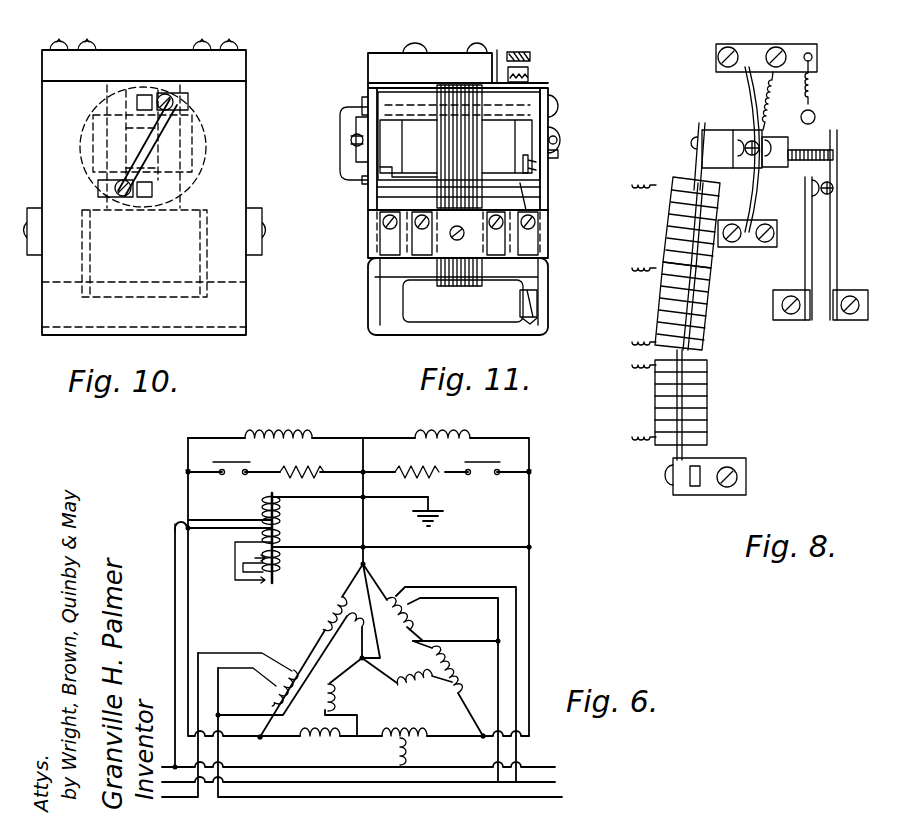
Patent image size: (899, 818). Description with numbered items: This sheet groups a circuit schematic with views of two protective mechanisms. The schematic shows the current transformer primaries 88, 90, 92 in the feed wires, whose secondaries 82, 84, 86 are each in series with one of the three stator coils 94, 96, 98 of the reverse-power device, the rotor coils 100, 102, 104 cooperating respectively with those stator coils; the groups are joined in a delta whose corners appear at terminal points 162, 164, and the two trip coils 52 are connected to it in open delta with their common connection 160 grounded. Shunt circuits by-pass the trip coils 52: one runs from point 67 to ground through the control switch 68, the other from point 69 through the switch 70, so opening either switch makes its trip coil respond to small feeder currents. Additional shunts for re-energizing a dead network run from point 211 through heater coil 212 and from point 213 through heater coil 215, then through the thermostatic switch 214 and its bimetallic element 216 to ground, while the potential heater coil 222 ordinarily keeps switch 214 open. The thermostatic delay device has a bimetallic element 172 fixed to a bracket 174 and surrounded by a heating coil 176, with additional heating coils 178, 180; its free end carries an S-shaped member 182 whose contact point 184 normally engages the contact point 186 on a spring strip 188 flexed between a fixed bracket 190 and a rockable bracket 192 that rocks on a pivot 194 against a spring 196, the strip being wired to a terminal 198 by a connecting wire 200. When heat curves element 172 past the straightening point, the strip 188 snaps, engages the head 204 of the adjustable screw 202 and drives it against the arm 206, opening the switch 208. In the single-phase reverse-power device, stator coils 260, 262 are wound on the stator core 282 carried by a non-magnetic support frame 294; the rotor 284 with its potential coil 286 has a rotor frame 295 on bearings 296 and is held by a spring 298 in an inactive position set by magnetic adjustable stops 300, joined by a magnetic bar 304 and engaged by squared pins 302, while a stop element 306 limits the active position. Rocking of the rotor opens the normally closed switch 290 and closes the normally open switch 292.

In FIG. 6, the trip coils 52 is at (282, 432).
In FIG. 6, the point 67 is at (188, 472).
In FIG. 6, the control switch 68 is at (230, 462).
In FIG. 6, the point 69 is at (529, 472).
In FIG. 6, the switch 70 is at (486, 462).
In FIG. 6, the current transformer secondary 82 is at (395, 734).
In FIG. 6, the current transformer secondary 84 is at (413, 622).
In FIG. 6, the current transformer secondary 86 is at (293, 670).
In FIG. 6, the current transformer primary 88 is at (410, 752).
In FIG. 6, the current transformer primary 90 is at (393, 605).
In FIG. 6, the current transformer primary 92 is at (266, 679).
In FIG. 6, the stator coil 94 is at (322, 740).
In FIG. 6, the stator coil 96 is at (452, 666).
In FIG. 6, the stator coil 98 is at (334, 611).
In FIG. 6, the rotor coil 100 is at (334, 695).
In FIG. 6, the rotor coil 102 is at (421, 684).
In FIG. 6, the rotor coil 104 is at (353, 634).
In FIG. 6, the common connection 160 is at (362, 565).
In FIG. 6, the terminal junction 162 is at (260, 739).
In FIG. 6, the terminal junction 164 is at (483, 738).
In FIG. 8, the bimetallic element 172 is at (692, 145).
In FIG. 8, the bracket 174 is at (739, 458).
In FIG. 8, the heating coil 176 is at (710, 398).
In FIG. 8, the heating coil 178 is at (662, 298).
In FIG. 6, the heating coil 178 is at (397, 466).
In FIG. 8, the heating coil 180 is at (672, 239).
In FIG. 6, the heating coil 180 is at (318, 465).
In FIG. 8, the S-shaped member 182 is at (746, 132).
In FIG. 8, the contact point 184 is at (750, 162).
In FIG. 8, the contact point 186 is at (760, 140).
In FIG. 8, the spring strip 188 is at (750, 90).
In FIG. 8, the fixed bracket 190 is at (761, 250).
In FIG. 8, the rockable bracket 192 is at (809, 52).
In FIG. 8, the pivot 194 is at (720, 53).
In FIG. 8, the spring 196 is at (814, 90).
In FIG. 8, the terminal 198 is at (788, 40).
In FIG. 8, the connecting wire 200 is at (776, 108).
In FIG. 8, the adjustable screw 202 is at (818, 140).
In FIG. 8, the screw head 204 is at (778, 160).
In FIG. 8, the arm 206 is at (832, 249).
In FIG. 8, the switch 208 is at (834, 180).
In FIG. 6, the point 211 is at (172, 528).
In FIG. 6, the heater coil 212 is at (282, 540).
In FIG. 6, the point 213 is at (529, 547).
In FIG. 6, the thermostatic switch 214 is at (258, 579).
In FIG. 6, the heater coil 215 is at (277, 564).
In FIG. 6, the bimetallic element 216 is at (284, 520).
In FIG. 6, the heater coil 222 is at (262, 510).
In FIG. 11, the stator coil 260 is at (510, 278).
In FIG. 11, the stator coil 262 is at (546, 296).
In FIG. 11, the stator core 282 is at (462, 139).
In FIG. 10, the rotor 284 is at (187, 189).
In FIG. 10, the potential coil 286 is at (98, 102).
In FIG. 11, the potential coil 286 is at (522, 130).
In FIG. 11, the normally closed switch 290 is at (500, 72).
In FIG. 11, the normally open switch 292 is at (520, 44).
In FIG. 11, the support frame 294 is at (368, 280).
In FIG. 11, the rotor frame 295 is at (370, 155).
In FIG. 11, the bearings 296 is at (346, 110).
In FIG. 11, the spring 298 is at (526, 181).
In FIG. 10, the adjustable stops 300 is at (189, 103).
In FIG. 11, the adjustable stops 300 is at (366, 86).
In FIG. 10, the squared pins 302 is at (144, 97).
In FIG. 10, the bar 304 is at (94, 160).
In FIG. 11, the bar 304 is at (337, 124).
In FIG. 10, the stop element 306 is at (195, 150).
In FIG. 11, the stop element 306 is at (533, 154).